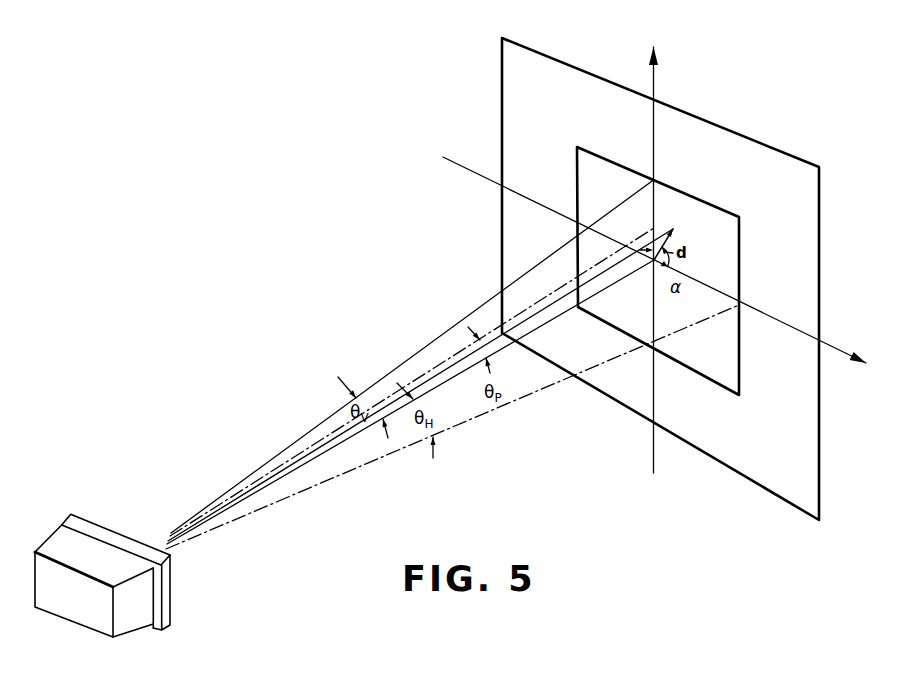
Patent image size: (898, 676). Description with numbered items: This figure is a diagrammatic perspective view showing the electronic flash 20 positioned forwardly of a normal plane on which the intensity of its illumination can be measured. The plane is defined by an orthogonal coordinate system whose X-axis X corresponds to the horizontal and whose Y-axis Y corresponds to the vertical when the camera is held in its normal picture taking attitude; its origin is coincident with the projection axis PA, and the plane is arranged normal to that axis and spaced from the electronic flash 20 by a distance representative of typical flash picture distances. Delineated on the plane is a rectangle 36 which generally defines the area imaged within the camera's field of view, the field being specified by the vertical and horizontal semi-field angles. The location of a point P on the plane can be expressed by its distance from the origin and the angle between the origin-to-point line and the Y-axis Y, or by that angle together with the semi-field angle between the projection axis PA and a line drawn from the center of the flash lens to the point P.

The electronic flash 20 is at (102, 522).
The rectangle 36 is at (741, 264).
The projection axis PA is at (326, 453).
The X-axis X is at (664, 268).
The Y-axis Y is at (652, 249).
The point P(x, y) P is at (691, 243).